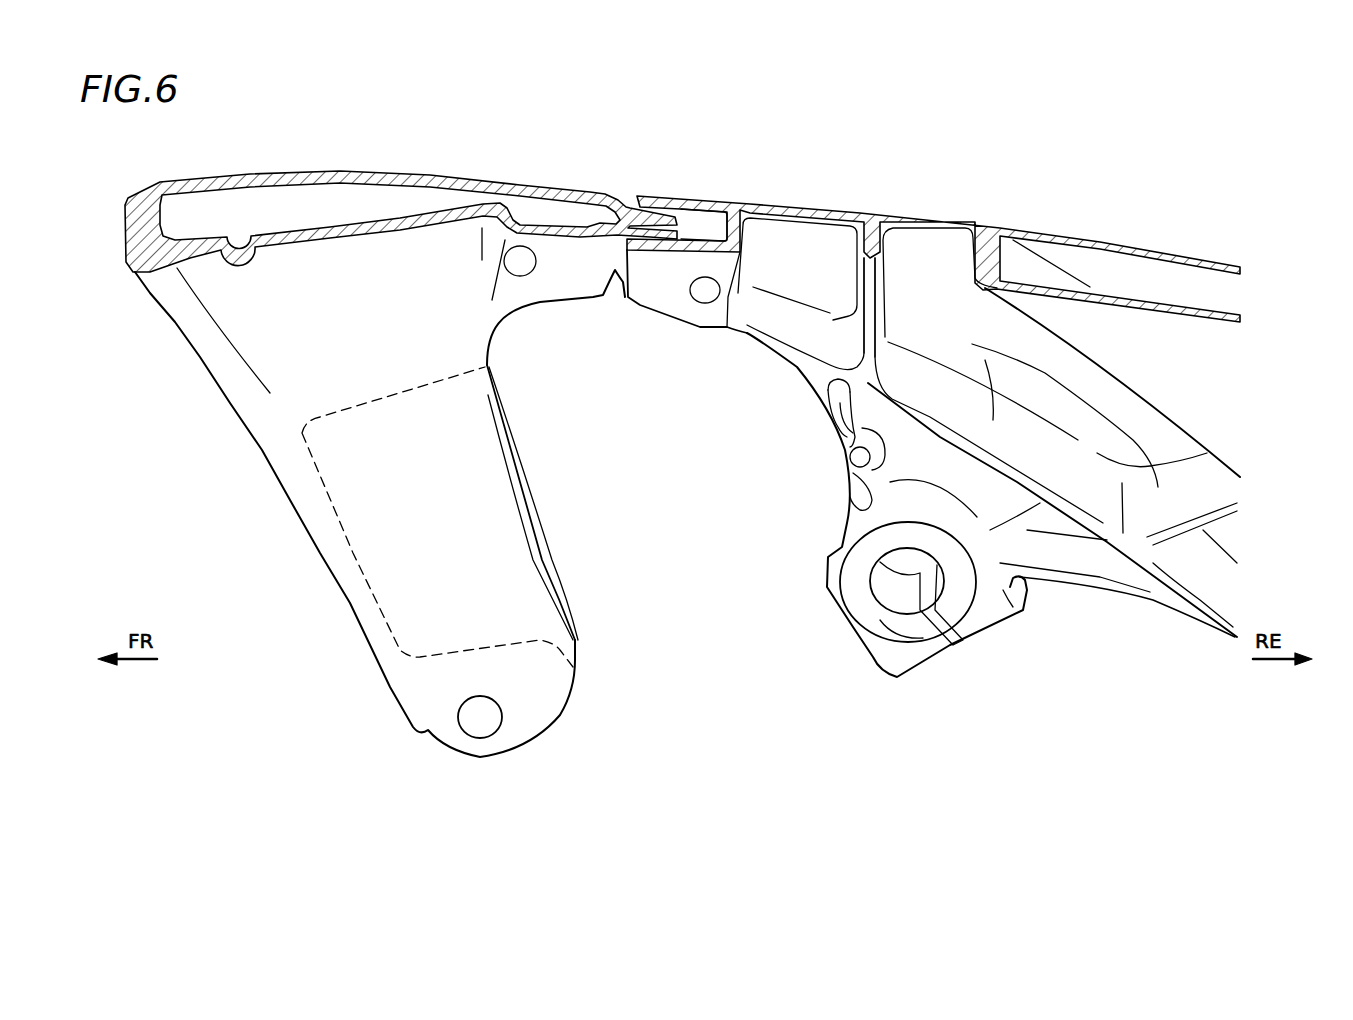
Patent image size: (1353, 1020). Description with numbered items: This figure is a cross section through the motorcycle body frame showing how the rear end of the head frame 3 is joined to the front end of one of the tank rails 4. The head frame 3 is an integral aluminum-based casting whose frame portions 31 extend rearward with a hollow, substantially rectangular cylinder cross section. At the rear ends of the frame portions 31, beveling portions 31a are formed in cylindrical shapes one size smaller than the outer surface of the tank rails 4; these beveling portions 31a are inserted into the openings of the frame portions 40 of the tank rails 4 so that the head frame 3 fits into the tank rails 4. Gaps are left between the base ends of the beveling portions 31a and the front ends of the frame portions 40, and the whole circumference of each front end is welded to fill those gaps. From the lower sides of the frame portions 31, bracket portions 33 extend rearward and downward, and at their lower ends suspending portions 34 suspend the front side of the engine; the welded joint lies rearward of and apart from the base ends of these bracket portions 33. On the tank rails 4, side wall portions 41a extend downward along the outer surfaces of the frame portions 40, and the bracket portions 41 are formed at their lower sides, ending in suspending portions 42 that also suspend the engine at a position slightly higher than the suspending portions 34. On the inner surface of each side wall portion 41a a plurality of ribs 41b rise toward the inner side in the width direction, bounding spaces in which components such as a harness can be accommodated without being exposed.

The head frame 3 is at (401, 194).
The frame portions 31 is at (340, 177).
The beveling portions 31a is at (688, 213).
The bracket portions 33 is at (407, 527).
The suspending portions 34 is at (493, 730).
The tank rails 4 is at (933, 245).
The frame portions 40 is at (1080, 237).
The bracket portions 41 is at (897, 465).
The side wall portions 41a is at (923, 242).
The rib 41b is at (878, 317).
The suspending portions 42 is at (887, 620).